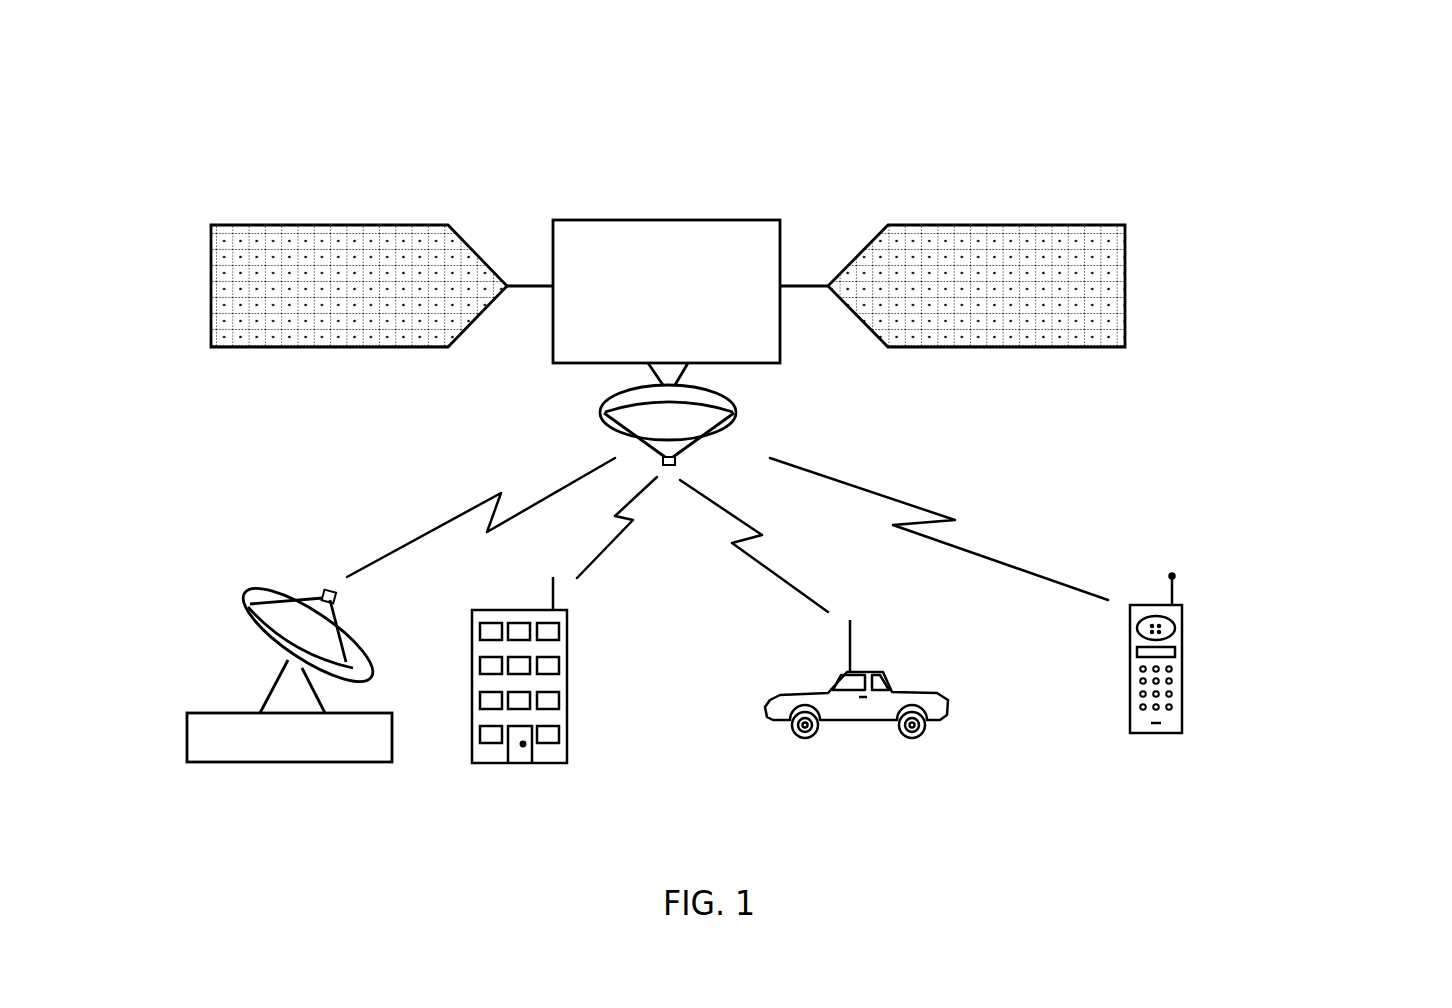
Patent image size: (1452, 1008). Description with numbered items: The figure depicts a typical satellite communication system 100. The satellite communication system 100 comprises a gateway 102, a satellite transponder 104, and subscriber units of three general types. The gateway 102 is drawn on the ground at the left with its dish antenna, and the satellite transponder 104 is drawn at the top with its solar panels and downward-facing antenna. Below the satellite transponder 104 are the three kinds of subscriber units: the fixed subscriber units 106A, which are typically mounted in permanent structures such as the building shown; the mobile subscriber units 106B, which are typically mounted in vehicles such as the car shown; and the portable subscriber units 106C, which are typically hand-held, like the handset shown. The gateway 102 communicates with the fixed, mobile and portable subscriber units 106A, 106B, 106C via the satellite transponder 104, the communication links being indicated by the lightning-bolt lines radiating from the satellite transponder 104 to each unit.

The satellite communication system 100 is at (879, 333).
The gateway 102 is at (348, 713).
The satellite transponder 104 is at (722, 220).
The fixed subscriber unit 106A is at (547, 762).
The mobile subscriber unit 106B is at (875, 720).
The portable subscriber unit 106C is at (1143, 733).